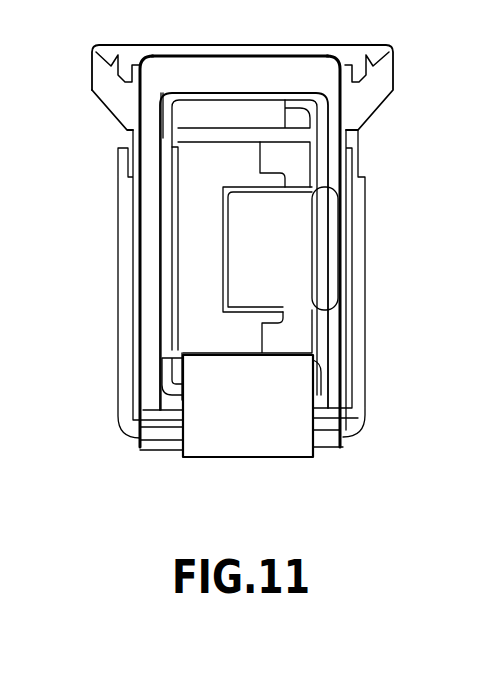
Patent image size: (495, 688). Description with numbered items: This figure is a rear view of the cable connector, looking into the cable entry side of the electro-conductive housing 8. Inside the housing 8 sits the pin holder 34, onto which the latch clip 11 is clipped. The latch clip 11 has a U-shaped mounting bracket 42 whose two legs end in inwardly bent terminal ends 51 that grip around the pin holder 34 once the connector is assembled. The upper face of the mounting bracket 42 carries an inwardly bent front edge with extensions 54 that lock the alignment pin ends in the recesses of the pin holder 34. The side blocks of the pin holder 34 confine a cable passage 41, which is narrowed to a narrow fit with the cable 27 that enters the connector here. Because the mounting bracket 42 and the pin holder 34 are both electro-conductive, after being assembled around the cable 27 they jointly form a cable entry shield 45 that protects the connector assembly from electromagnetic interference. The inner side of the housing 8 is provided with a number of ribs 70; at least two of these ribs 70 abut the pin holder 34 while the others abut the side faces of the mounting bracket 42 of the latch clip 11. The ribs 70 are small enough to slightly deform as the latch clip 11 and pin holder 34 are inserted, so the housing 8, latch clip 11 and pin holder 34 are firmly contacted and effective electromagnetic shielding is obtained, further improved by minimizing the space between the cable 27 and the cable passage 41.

The housing 8 is at (383, 65).
The latch clip 11 is at (248, 437).
The cable 27 is at (328, 255).
The pin holder 34 is at (178, 270).
The cable passage 41 is at (247, 156).
The mounting bracket 42 is at (298, 165).
The cable entry shield 45 is at (290, 335).
The inwardly bent terminal ends 51 is at (170, 383).
The extensions 54 is at (270, 342).
The ribs 70 is at (223, 98).